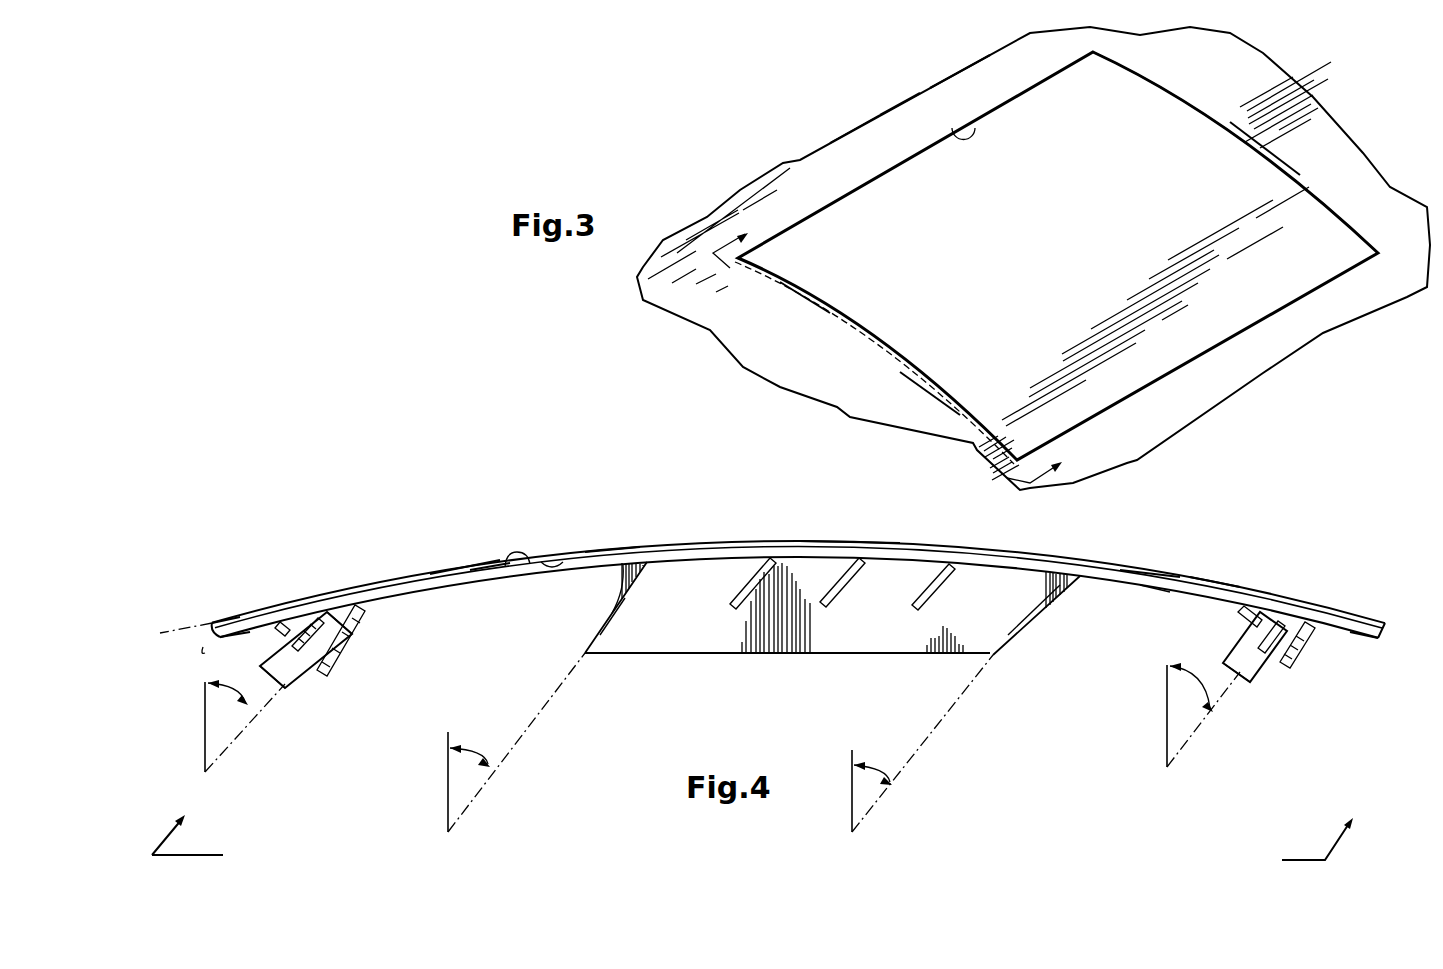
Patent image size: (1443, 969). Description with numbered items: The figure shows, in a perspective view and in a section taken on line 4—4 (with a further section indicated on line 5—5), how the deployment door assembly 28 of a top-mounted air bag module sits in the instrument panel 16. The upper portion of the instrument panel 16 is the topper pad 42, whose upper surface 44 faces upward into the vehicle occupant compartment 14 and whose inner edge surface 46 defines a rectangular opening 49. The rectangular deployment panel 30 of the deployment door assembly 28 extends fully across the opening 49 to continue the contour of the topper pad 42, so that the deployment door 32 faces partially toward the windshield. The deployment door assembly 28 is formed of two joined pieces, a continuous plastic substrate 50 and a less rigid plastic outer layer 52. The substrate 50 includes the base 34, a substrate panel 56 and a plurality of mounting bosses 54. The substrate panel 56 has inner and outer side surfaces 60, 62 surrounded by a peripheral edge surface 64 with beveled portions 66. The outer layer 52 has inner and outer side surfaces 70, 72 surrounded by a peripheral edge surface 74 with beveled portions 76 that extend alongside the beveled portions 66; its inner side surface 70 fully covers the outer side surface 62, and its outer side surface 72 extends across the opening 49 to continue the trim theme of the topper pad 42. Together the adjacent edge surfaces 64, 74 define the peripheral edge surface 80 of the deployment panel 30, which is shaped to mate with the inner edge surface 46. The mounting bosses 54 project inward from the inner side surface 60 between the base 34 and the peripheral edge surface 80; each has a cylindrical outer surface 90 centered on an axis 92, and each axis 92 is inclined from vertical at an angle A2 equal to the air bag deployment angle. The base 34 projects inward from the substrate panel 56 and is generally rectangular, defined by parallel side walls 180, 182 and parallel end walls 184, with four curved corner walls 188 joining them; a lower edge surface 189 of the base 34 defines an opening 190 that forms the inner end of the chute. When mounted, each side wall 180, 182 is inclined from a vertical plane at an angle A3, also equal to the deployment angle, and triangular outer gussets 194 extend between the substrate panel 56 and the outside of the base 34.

In FIG. 3, the section line 4— 4 is at (893, 354).
In FIG. 4, the section line 5— 5 is at (758, 824).
In FIG. 3, the vehicle occupant compartment 14 is at (1088, 180).
In FIG. 4, the vehicle occupant compartment 14 is at (584, 450).
In FIG. 3, the instrument panel 16 is at (797, 158).
In FIG. 3, the deployment door assembly 28 is at (1147, 75).
In FIG. 4, the deployment door assembly 28 is at (443, 470).
In FIG. 3, the deployment panel 30 is at (1263, 190).
In FIG. 4, the deployment panel 30 is at (458, 562).
In FIG. 3, the deployment door 32 is at (1024, 275).
In FIG. 4, the deployment door 32 is at (860, 543).
In FIG. 4, the base 34 is at (634, 651).
In FIG. 3, the topper pad 42 is at (855, 168).
In FIG. 4, the topper pad 42 is at (158, 630).
In FIG. 3, the upper surface 44 is at (897, 150).
In FIG. 4, the upper surface 44 is at (203, 647).
In FIG. 3, the inner edge surface 46 is at (965, 110).
In FIG. 4, the inner edge surface 46 is at (205, 653).
In FIG. 3, the opening 49 is at (977, 121).
In FIG. 4, the opening 49 is at (257, 575).
In FIG. 4, the substrate 50 is at (397, 590).
In FIG. 3, the outer layer 52 is at (803, 290).
In FIG. 4, the outer layer 52 is at (480, 563).
In FIG. 4, the mounting bosses 54 is at (337, 669).
In FIG. 4, the substrate panel 56 is at (433, 583).
In FIG. 4, the inner side surface 60 is at (470, 583).
In FIG. 4, the outer side surface 62 is at (527, 562).
In FIG. 4, the peripheral edge surface 64 is at (1153, 588).
In FIG. 4, the beveled portions 66 is at (220, 637).
In FIG. 4, the inner side surface 70 is at (567, 560).
In FIG. 3, the outer side surface 72 is at (925, 330).
In FIG. 4, the outer side surface 72 is at (585, 553).
In FIG. 3, the peripheral edge surface 74 is at (943, 393).
In FIG. 4, the peripheral edge surface 74 is at (1150, 575).
In FIG. 4, the beveled portions 76 is at (214, 621).
In FIG. 4, the peripheral edge surface 80 is at (1214, 574).
In FIG. 4, the cylindrical outer surface 90 is at (285, 683).
In FIG. 4, the axis 92 is at (230, 738).
In FIG. 4, the side wall 180 is at (1008, 635).
In FIG. 4, the side wall 182 is at (612, 613).
In FIG. 4, the end wall 184 is at (700, 635).
In FIG. 4, the curved corner walls 188 is at (612, 633).
In FIG. 4, the lower edge surface 189 is at (782, 655).
In FIG. 4, the opening 190 is at (816, 663).
In FIG. 4, the outer gussets 194 is at (745, 590).
In FIG. 4, the angle A2 is at (709, 689).
In FIG. 4, the angle A3 is at (720, 742).